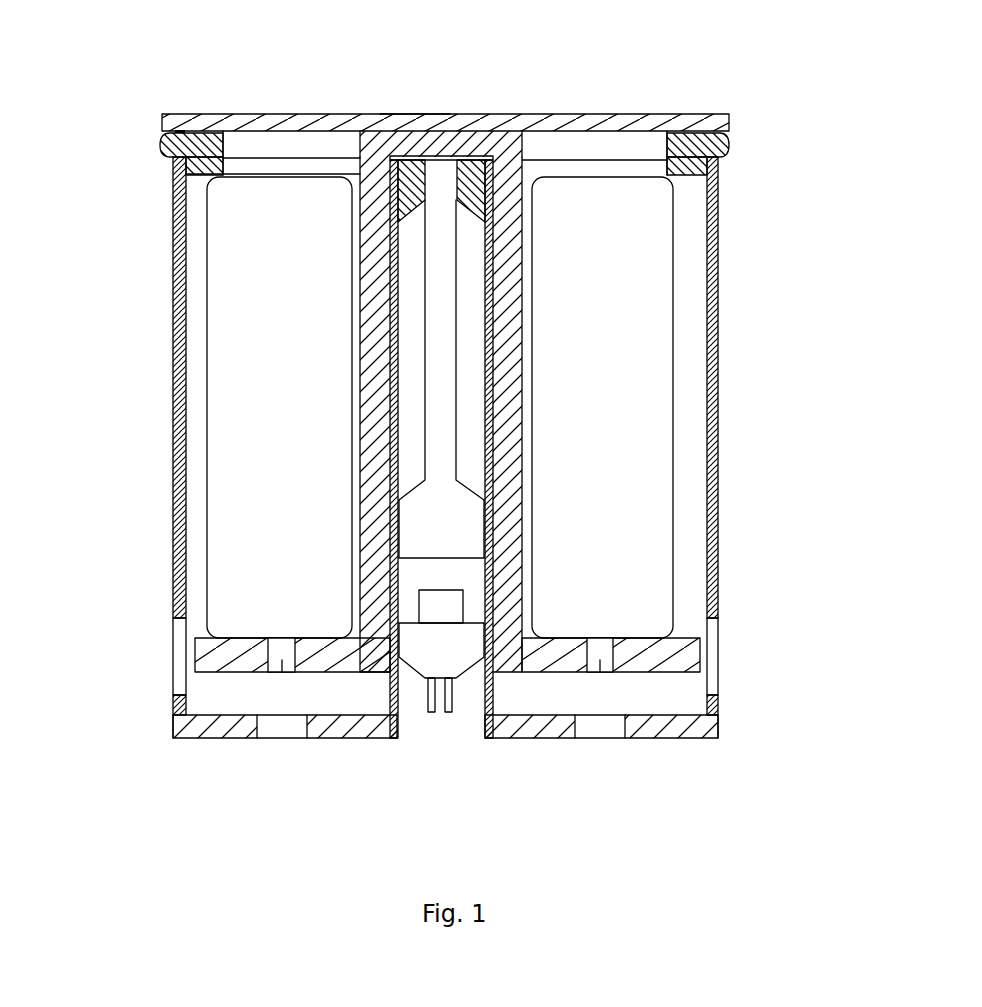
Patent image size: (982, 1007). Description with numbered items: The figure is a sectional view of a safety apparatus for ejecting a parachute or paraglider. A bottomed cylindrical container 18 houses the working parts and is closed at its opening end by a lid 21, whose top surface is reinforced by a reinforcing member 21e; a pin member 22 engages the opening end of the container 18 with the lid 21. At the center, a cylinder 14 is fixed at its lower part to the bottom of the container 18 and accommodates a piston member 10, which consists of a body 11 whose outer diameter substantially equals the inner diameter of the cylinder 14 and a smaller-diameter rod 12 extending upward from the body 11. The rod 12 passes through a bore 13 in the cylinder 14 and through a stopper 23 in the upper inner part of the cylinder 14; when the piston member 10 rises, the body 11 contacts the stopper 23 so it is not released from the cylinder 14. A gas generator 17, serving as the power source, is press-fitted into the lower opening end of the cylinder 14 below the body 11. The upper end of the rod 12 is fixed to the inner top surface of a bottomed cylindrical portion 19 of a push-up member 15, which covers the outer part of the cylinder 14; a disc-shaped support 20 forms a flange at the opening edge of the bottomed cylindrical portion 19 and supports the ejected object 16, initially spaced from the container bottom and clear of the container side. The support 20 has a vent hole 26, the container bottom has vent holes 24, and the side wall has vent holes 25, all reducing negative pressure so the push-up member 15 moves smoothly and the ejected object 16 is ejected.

The piston member 10 is at (628, 379).
The body 11 is at (455, 520).
The rod 12 is at (447, 468).
The bore 13 is at (428, 165).
The cylinder 14 is at (518, 210).
The push-up member 15 is at (413, 121).
The ejected object 16 is at (650, 270).
The gas generator 17 is at (440, 720).
The container 18 is at (710, 323).
The bottomed cylindrical portion 19 is at (467, 178).
The support 20 is at (333, 657).
The lid 21 is at (212, 120).
The reinforcing member 21e is at (283, 143).
The pin member 22 is at (159, 146).
The stopper 23 is at (463, 140).
The vent holes 24 is at (273, 732).
The vent holes 25 is at (178, 675).
The vent hole 26 is at (282, 660).